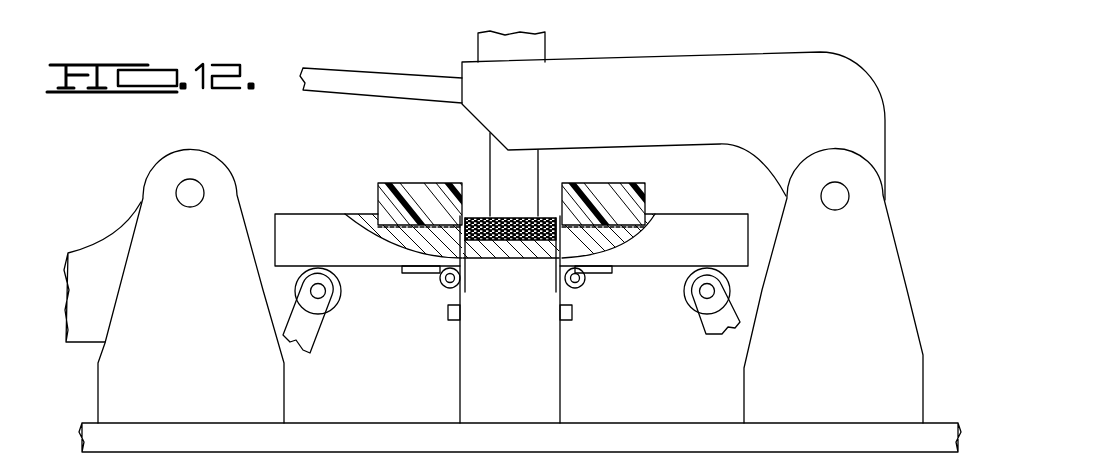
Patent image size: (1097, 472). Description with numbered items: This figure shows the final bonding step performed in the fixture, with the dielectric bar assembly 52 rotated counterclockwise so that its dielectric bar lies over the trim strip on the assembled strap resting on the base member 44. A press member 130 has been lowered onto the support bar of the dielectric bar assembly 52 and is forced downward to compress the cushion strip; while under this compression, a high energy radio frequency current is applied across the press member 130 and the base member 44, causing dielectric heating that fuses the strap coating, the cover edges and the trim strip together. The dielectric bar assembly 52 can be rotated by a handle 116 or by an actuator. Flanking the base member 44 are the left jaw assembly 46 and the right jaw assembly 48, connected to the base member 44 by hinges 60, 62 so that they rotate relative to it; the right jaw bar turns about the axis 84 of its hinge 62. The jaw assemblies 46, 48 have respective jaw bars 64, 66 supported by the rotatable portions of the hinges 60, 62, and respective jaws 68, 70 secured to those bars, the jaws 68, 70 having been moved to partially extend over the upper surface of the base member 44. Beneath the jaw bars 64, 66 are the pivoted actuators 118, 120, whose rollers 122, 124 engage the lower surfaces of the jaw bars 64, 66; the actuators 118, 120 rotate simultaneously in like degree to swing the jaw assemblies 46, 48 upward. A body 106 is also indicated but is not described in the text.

The base member 44 is at (522, 354).
The left jaw assembly 46 is at (331, 180).
The right jaw assembly 48 is at (716, 203).
The dielectric bar assembly 52 is at (735, 52).
The hinge 60 is at (446, 290).
The hinge 62 is at (577, 290).
The jaw bar 64 is at (294, 214).
The jaw bar 66 is at (739, 215).
The jaw 68 is at (419, 175).
The jaw 70 is at (657, 189).
The axis 84 is at (560, 284).
The press arm 106 is at (632, 58).
The handle 116 is at (365, 72).
The pivoted actuator 118 is at (314, 334).
The pivoted actuator 120 is at (712, 340).
The roller 122 is at (337, 308).
The roller 124 is at (690, 318).
The press member 130 is at (554, 39).